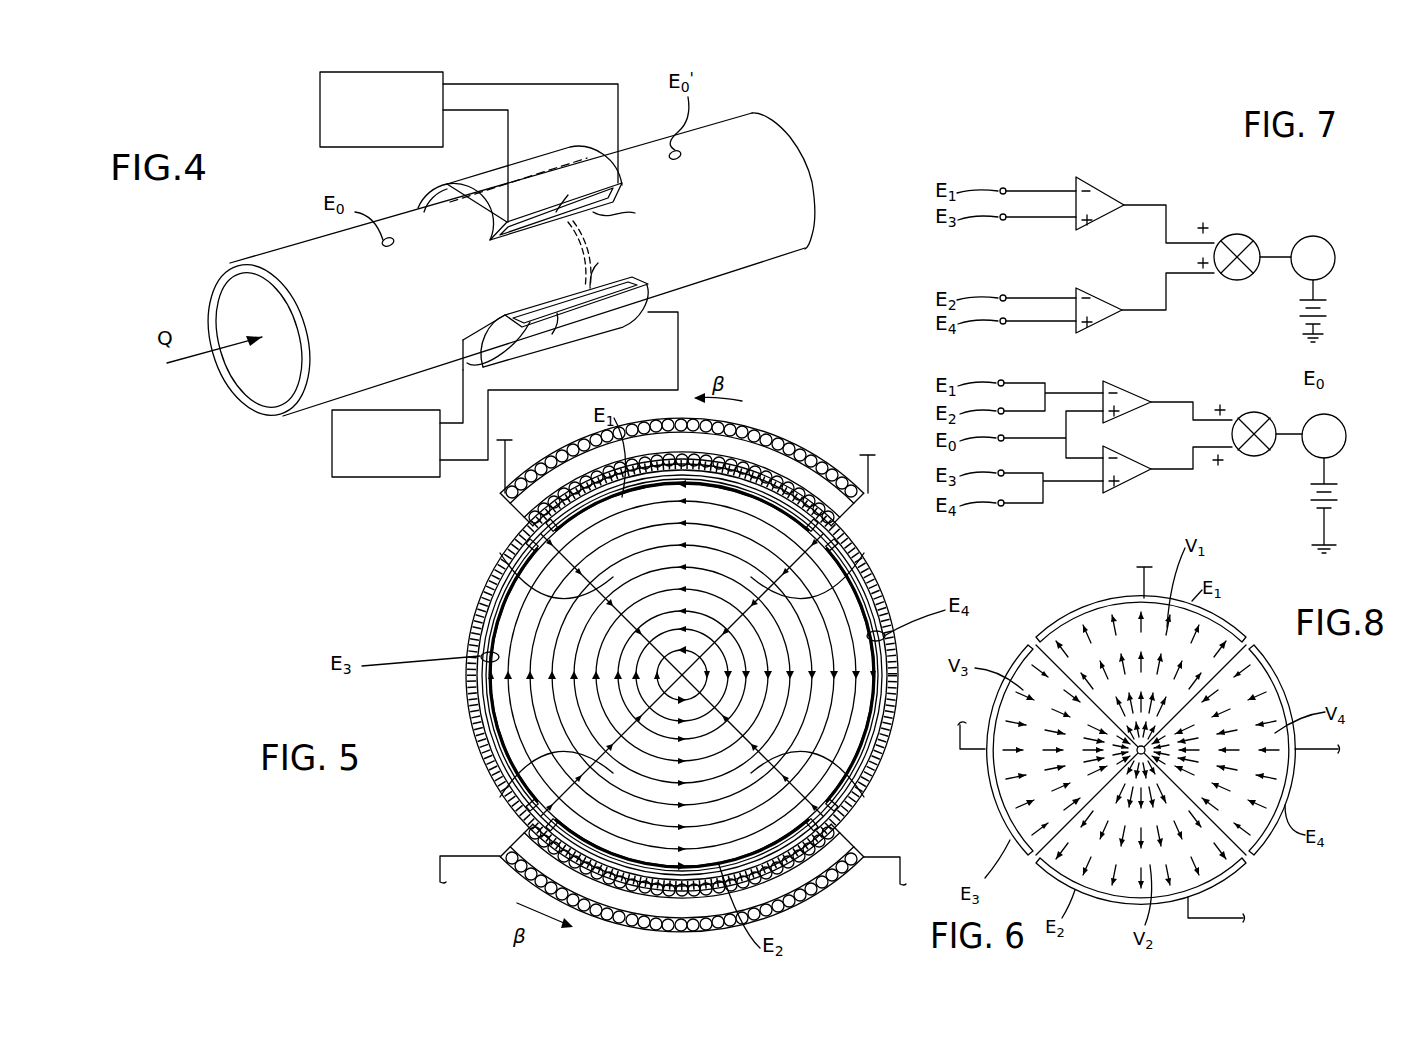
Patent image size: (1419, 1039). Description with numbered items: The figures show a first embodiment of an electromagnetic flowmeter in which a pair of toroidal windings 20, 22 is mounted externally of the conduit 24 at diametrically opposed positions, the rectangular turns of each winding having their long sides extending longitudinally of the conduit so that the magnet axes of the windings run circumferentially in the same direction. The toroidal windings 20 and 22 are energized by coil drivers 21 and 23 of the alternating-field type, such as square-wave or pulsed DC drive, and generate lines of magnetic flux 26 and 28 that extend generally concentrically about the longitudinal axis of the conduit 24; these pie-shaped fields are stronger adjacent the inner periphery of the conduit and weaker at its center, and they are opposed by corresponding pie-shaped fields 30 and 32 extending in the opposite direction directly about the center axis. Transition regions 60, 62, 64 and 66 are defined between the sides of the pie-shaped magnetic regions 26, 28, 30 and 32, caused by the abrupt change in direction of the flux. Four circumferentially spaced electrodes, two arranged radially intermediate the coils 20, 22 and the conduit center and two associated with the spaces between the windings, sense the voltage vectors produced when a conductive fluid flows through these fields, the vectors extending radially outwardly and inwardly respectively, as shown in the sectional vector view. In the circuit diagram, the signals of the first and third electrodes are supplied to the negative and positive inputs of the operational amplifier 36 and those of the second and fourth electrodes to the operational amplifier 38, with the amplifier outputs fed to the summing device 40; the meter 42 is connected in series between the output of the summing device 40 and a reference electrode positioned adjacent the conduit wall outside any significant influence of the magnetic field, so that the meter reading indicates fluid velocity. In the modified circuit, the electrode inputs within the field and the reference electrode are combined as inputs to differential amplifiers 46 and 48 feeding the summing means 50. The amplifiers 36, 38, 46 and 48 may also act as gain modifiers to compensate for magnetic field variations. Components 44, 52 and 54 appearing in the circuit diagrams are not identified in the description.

In FIG. 4, the toroidal winding 20 is at (553, 160).
In FIG. 5, the toroidal winding 20 is at (755, 426).
In FIG. 4, the coil driver 21 is at (320, 102).
In FIG. 4, the toroidal winding 22 is at (593, 332).
In FIG. 5, the toroidal winding 22 is at (822, 892).
In FIG. 4, the coil driver 23 is at (332, 465).
In FIG. 4, the conduit 24 is at (268, 262).
In FIG. 5, the conduit 24 is at (512, 563).
In FIG. 5, the lines of magnetic flux 26 is at (757, 537).
In FIG. 5, the lines of magnetic flux 28 is at (640, 840).
In FIG. 5, the opposing pie-shaped magnetic field 30 is at (490, 596).
In FIG. 5, the opposing pie-shaped magnetic field 32 is at (830, 605).
In FIG. 7, the operational amplifier 36 is at (1105, 197).
In FIG. 7, the operational amplifier 38 is at (1097, 314).
In FIG. 7, the summing device 40 is at (1232, 278).
In FIG. 7, the meter 42 is at (1326, 240).
In FIG. 7, the battery 44 is at (1328, 312).
In FIG. 7, the differential amplifier 46 is at (1130, 401).
In FIG. 7, the differential amplifier 48 is at (1128, 478).
In FIG. 7, the summing means 50 is at (1254, 413).
In FIG. 7, the motor indicator 52 is at (1340, 419).
In FIG. 7, the battery 54 is at (1339, 500).
In FIG. 5, the transition region 60 is at (560, 548).
In FIG. 5, the transition region 62 is at (820, 550).
In FIG. 5, the transition region 64 is at (505, 794).
In FIG. 5, the transition region 66 is at (860, 797).